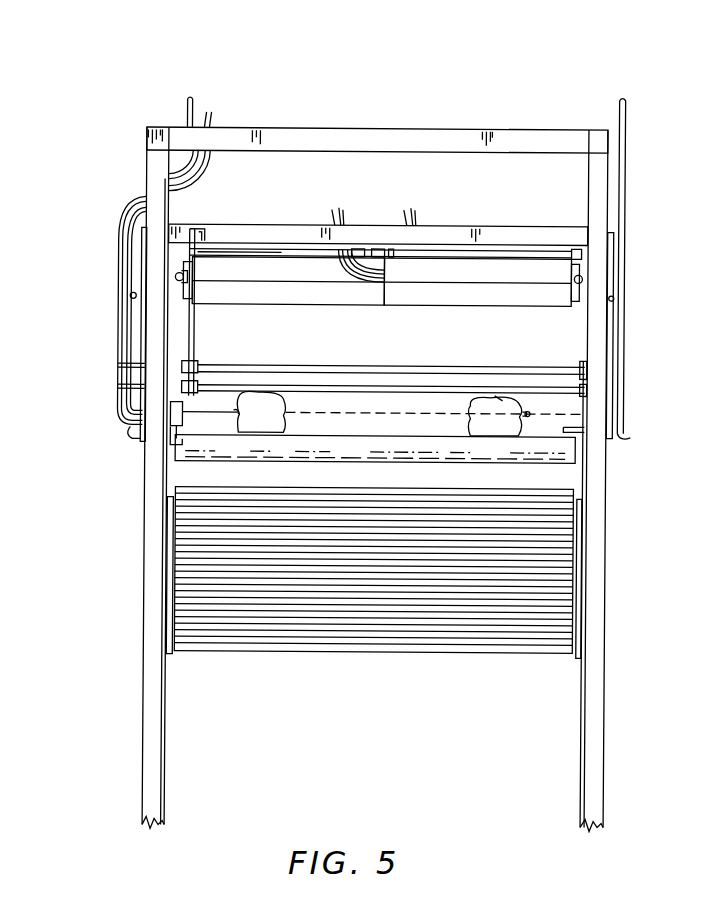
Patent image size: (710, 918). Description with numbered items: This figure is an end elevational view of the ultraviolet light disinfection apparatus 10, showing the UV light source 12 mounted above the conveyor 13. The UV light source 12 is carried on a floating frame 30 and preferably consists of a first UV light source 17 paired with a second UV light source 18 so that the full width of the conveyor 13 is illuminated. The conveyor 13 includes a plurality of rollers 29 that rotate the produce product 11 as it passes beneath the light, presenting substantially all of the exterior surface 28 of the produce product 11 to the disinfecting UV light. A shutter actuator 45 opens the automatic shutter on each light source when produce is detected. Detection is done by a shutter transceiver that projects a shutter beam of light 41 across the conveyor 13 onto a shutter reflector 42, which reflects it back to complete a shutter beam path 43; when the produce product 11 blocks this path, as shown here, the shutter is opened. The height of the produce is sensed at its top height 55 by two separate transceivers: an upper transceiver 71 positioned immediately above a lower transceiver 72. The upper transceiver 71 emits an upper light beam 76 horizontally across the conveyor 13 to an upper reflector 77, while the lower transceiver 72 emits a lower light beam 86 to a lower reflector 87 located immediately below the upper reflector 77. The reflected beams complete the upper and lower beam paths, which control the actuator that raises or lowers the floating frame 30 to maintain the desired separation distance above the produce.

The ultraviolet light disinfection apparatus 10 is at (243, 78).
The UV light source 12 is at (373, 279).
The conveyor 13 is at (130, 508).
The floating frame 30 is at (230, 238).
The shutter actuator 45 is at (174, 278).
The upper transceiver 71 is at (198, 365).
The lower transceiver 72 is at (198, 385).
The first UV light source 17 is at (284, 299).
The second UV light source 18 is at (482, 300).
The upper light beam 76 is at (298, 366).
The lower light beam 86 is at (372, 386).
The top height 55 is at (500, 397).
The upper reflector 77 is at (588, 368).
The lower reflector 87 is at (588, 390).
The shutter reflector 42 is at (588, 405).
The rollers 29 is at (565, 452).
The exterior surface 28 is at (272, 425).
The shutter beam of light 41 is at (231, 416).
The produce product 11 is at (262, 428).
The shutter beam path 43 is at (333, 414).